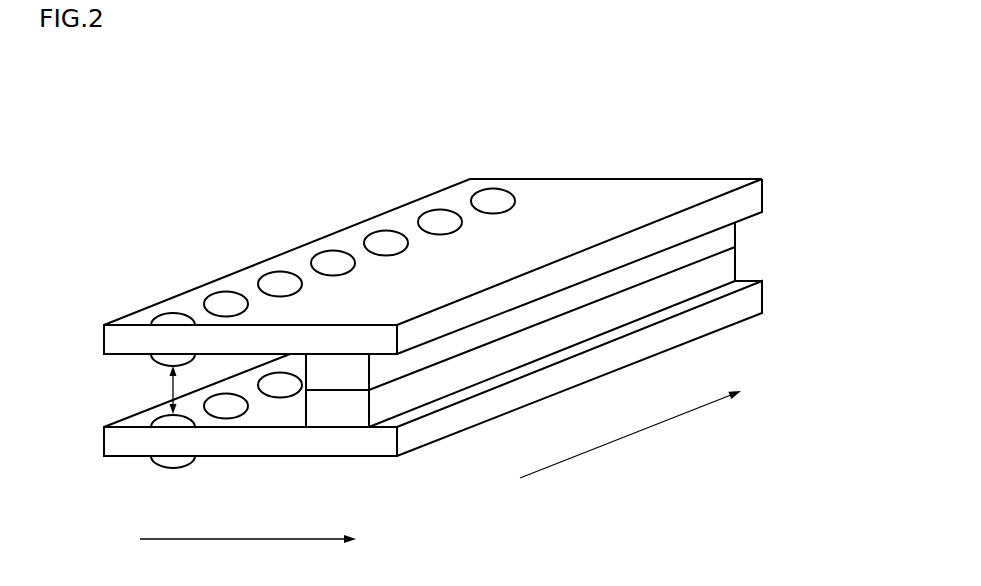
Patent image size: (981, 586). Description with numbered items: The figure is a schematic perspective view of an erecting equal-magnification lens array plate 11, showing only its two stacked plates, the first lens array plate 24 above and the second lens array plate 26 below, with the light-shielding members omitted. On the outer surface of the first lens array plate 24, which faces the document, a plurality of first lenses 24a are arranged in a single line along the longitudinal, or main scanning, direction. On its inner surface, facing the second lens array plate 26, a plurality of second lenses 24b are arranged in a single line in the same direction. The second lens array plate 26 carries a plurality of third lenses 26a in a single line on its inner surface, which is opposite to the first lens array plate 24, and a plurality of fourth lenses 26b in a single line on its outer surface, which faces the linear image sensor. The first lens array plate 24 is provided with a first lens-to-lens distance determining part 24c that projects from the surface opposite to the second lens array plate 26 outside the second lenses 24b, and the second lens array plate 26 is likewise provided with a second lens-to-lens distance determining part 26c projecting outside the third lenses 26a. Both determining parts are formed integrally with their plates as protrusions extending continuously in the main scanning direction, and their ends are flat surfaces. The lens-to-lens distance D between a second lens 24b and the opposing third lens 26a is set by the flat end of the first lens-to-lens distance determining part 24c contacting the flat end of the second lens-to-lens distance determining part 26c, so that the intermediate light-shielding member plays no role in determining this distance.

The erecting equal-magnification lens array plate 11 is at (607, 124).
The first lens array plate 24 is at (763, 188).
The first lenses 24a is at (333, 250).
The second lenses 24b is at (157, 361).
The first lens-to-lens distance determining part 24c is at (369, 367).
The second lens array plate 26 is at (763, 290).
The third lenses 26a is at (163, 415).
The fourth lenses 26b is at (172, 467).
The second lens-to-lens distance determining part 26c is at (369, 402).